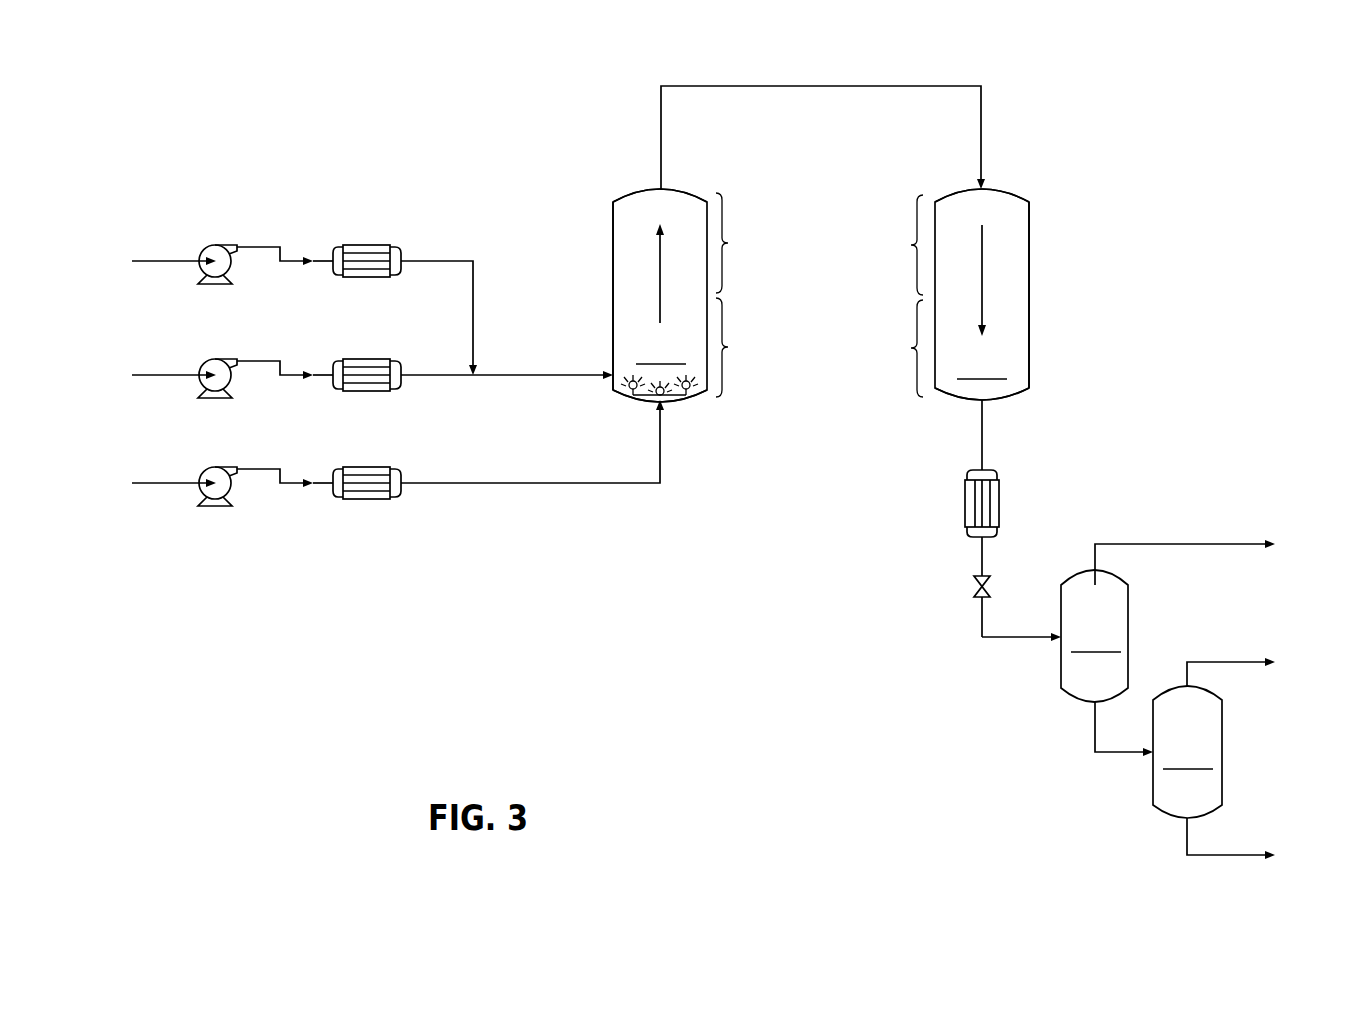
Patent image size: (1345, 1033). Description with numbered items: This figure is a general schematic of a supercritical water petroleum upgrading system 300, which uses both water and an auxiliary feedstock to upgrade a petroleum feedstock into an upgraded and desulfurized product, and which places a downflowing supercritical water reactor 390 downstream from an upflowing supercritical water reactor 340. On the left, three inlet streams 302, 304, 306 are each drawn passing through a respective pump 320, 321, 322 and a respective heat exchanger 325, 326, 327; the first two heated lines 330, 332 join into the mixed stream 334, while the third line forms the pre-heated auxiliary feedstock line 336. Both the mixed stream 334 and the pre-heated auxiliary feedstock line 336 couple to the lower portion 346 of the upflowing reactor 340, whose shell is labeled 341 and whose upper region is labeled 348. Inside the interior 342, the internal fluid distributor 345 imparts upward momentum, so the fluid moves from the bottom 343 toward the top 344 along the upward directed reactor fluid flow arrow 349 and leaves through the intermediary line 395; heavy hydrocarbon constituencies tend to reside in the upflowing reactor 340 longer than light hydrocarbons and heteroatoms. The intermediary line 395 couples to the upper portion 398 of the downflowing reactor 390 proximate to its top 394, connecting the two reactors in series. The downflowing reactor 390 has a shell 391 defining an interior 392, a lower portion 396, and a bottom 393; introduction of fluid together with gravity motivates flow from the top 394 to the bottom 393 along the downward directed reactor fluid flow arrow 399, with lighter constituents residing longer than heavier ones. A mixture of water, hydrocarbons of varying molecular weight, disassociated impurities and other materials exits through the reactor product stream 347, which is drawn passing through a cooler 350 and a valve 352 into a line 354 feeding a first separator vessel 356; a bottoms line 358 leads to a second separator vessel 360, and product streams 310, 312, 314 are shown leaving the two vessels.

The supercritical water petroleum upgrading system 300 is at (254, 86).
The first feed stream 302 is at (248, 260).
The second feed stream 304 is at (248, 375).
The third feed stream 306 is at (248, 483).
The first overhead product stream 310 is at (1215, 544).
The second overhead product stream 312 is at (1218, 662).
The bottoms product stream 314 is at (1218, 855).
The first pump 320 is at (220, 246).
The second pump 321 is at (220, 360).
The third pump 322 is at (220, 468).
The first heat exchanger 325 is at (367, 246).
The second heat exchanger 326 is at (366, 360).
The third heat exchanger 327 is at (366, 468).
The first heated stream 330 is at (418, 262).
The second heated stream 332 is at (440, 377).
The mixed stream 334 is at (520, 374).
The pre-heated auxiliary feedstock line 336 is at (492, 485).
The upflowing supercritical water reactor 340 is at (613, 215).
The reactor wall 341 is at (613, 250).
The interior 342 is at (662, 349).
The bottom 343 is at (700, 400).
The top 344 is at (632, 191).
The internal fluid distributor 345 is at (648, 398).
The lower portion 346 is at (728, 347).
The reactor product stream 347 is at (982, 435).
The upper reactor zone 348 is at (728, 243).
The upward directed reactor fluid flow arrow 349 is at (660, 290).
The cooler 350 is at (999, 500).
The pressure reduction valve 352 is at (975, 583).
The cooled effluent stream 354 is at (1012, 638).
The first separator 356 is at (1094, 636).
The separator bottoms stream 358 is at (1122, 752).
The second separator 360 is at (1187, 752).
The downflowing supercritical water reactor 390 is at (1029, 243).
The shell 391 is at (1029, 210).
The interior 392 is at (983, 364).
The bottom 393 is at (1012, 395).
The top 394 is at (1010, 191).
The intermediary line 395 is at (795, 86).
The lower portion 396 is at (910, 348).
The upper portion 398 is at (910, 245).
The downward directed reactor fluid flow arrow 399 is at (982, 292).